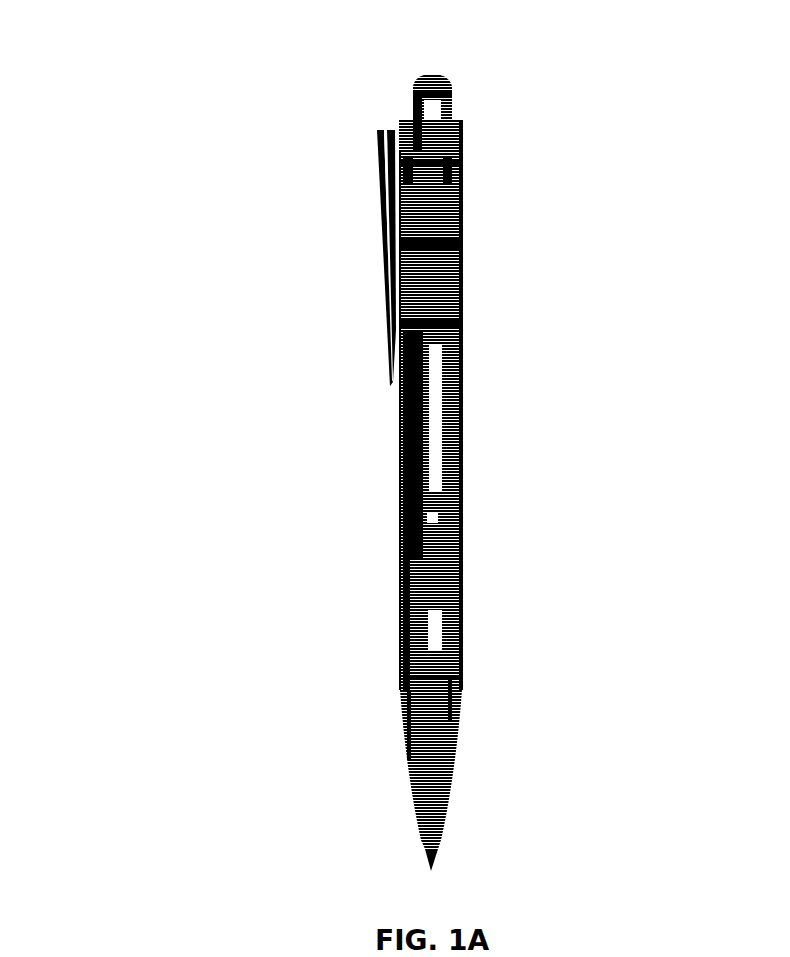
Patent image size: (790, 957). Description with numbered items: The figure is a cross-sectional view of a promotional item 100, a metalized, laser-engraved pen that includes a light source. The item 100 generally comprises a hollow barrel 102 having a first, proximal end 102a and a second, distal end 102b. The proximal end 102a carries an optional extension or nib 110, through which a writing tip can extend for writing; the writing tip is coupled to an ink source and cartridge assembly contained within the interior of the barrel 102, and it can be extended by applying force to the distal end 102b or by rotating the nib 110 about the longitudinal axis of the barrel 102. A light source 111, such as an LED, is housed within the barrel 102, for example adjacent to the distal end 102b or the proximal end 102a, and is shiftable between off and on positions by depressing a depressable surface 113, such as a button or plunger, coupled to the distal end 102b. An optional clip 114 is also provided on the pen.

The promotional item 100 is at (288, 221).
The hollow barrel 102 is at (525, 416).
The proximal end 102a is at (455, 690).
The distal end 102b is at (453, 181).
The nib 110 is at (437, 778).
The light source 111 is at (431, 357).
The depressable surface 113 is at (433, 77).
The clip 114 is at (433, 858).